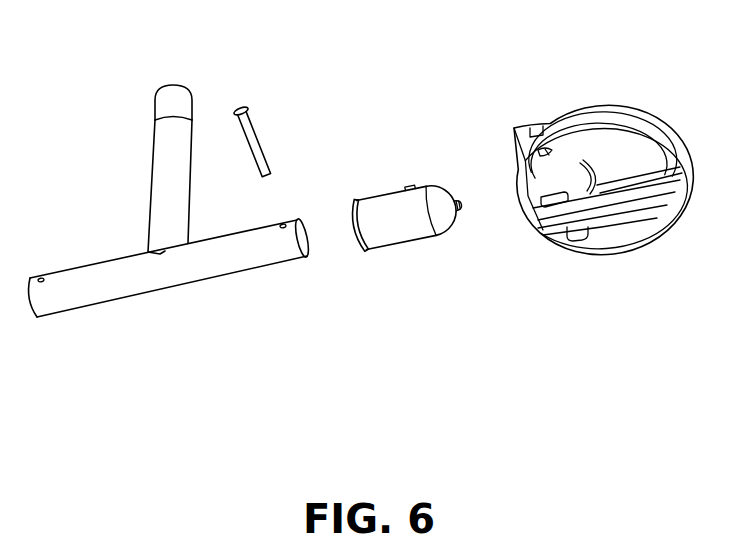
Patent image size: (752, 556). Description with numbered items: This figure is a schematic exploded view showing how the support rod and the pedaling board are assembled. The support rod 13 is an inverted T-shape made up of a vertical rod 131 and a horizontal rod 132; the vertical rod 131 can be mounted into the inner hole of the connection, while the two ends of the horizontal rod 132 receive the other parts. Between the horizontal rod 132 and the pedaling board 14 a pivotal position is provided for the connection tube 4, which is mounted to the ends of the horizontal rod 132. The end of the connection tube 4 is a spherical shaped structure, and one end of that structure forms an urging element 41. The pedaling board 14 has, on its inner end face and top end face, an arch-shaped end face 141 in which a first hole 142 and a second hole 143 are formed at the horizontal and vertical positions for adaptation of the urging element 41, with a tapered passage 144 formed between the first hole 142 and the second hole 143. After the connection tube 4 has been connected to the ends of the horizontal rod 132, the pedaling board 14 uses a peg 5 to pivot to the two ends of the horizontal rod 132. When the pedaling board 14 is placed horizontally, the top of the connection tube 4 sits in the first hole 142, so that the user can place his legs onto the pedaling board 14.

The connection tube 4 is at (415, 220).
The urging element 41 is at (459, 200).
The peg 5 is at (252, 142).
The support rod 13 is at (170, 254).
The vertical rod 131 is at (160, 134).
The horizontal rod 132 is at (127, 285).
The pedaling board 14 is at (612, 188).
The arch-shaped end face 141 is at (607, 182).
The first hole 142 is at (655, 153).
The second hole 143 is at (535, 200).
The tapered passage 144 is at (578, 192).